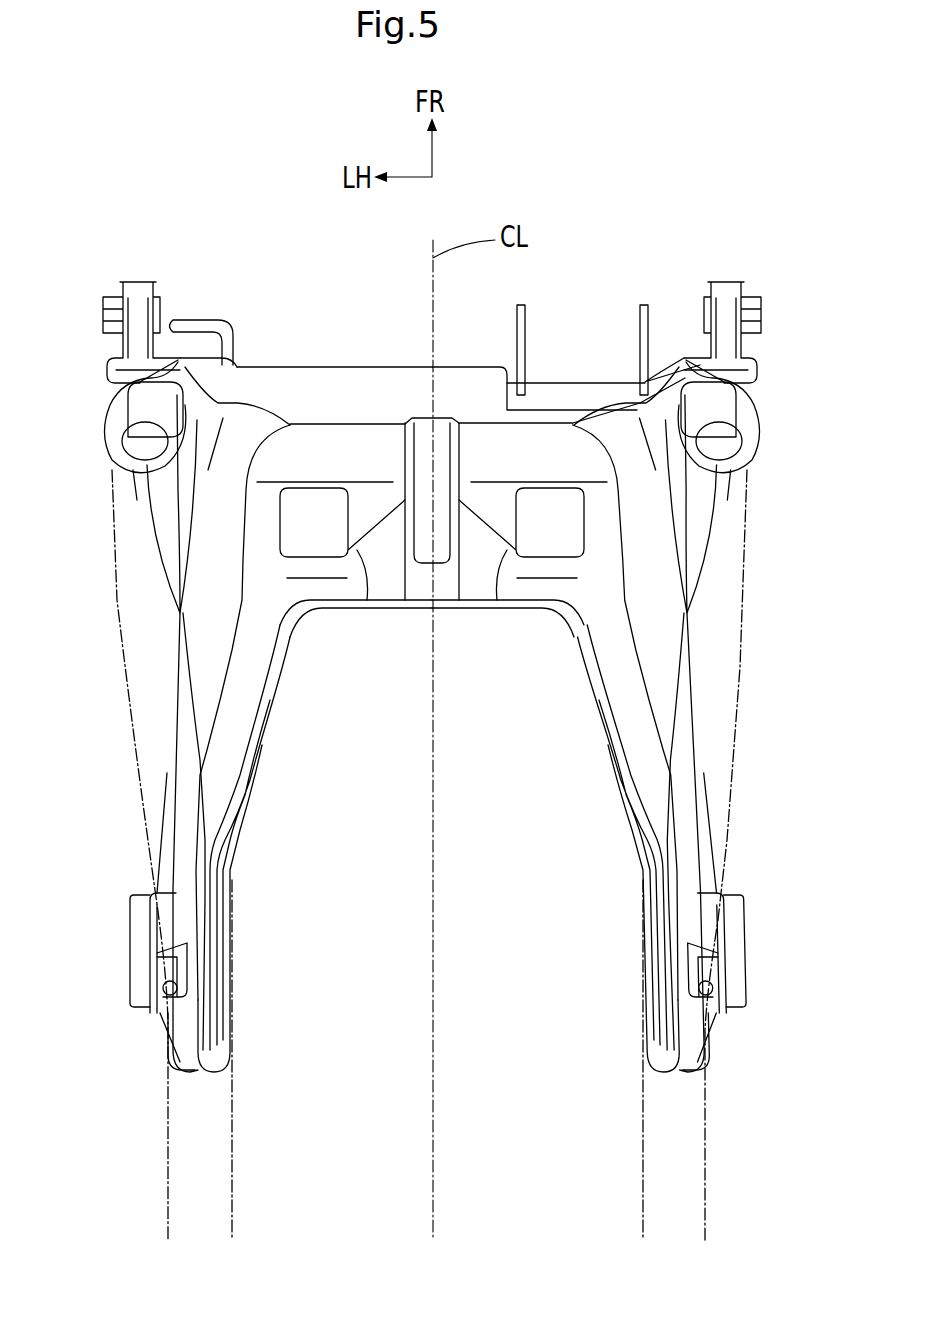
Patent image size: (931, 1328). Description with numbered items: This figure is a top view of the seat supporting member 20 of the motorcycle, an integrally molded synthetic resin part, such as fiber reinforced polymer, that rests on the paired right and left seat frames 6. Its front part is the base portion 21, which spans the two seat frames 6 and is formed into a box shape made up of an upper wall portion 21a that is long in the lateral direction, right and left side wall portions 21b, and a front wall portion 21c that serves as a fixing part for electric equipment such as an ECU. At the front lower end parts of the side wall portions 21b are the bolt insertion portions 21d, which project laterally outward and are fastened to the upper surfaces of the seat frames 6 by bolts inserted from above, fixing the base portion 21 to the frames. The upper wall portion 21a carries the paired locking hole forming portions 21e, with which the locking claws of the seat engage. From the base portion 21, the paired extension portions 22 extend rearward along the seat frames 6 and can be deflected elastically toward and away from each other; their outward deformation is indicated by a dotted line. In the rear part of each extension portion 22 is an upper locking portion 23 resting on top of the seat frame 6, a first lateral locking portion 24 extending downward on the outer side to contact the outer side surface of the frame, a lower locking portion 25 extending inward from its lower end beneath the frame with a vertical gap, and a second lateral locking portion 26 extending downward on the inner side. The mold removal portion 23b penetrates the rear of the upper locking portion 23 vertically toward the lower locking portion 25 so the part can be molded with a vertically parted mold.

The seat supporting member 20 is at (667, 252).
The base portion 21 is at (732, 370).
The upper wall portion 21a is at (528, 437).
The side wall portions 21b is at (193, 518).
The front wall portion 21c is at (462, 380).
The bolt insertion portions 21d is at (123, 422).
The locking hole forming portions 21e is at (335, 488).
The extension portions 22 is at (152, 772).
The upper locking portion 23 is at (147, 893).
The mold removal portion 23b is at (170, 953).
The first lateral locking portion 24 is at (157, 950).
The lower locking portion 25 is at (163, 985).
The second lateral locking portion 26 is at (232, 867).
The seat frames 6 is at (170, 1137).